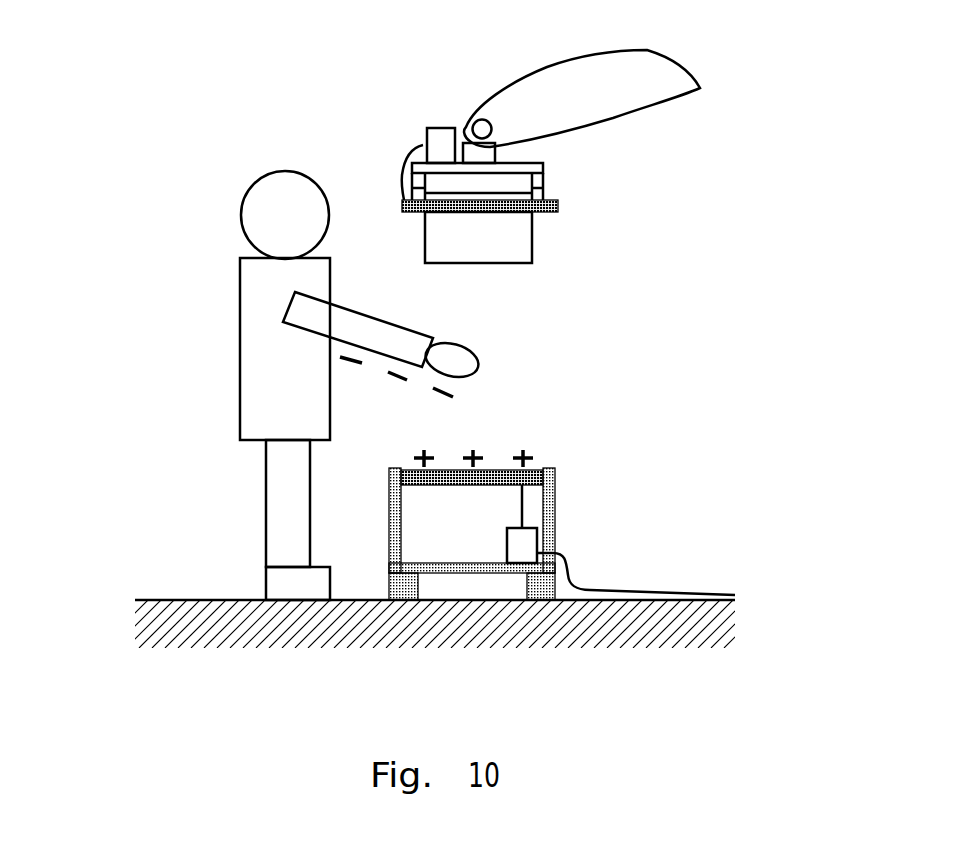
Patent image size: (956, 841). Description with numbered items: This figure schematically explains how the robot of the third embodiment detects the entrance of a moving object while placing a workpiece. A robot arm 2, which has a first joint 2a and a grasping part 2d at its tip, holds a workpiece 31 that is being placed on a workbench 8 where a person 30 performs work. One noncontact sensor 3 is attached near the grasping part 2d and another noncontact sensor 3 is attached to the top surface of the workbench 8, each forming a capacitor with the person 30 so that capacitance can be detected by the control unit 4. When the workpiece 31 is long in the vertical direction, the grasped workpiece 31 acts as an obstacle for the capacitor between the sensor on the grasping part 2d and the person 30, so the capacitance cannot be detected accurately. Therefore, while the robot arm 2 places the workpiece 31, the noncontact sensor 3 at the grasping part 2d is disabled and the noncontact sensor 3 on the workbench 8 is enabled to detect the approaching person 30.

The person 30 is at (285, 168).
The robot arm 2 is at (584, 67).
The first joint 2a is at (480, 115).
The grasping part 2d is at (545, 166).
The noncontact sensor 3 is at (558, 200).
The control unit 4 is at (438, 127).
The workpiece 31 is at (523, 242).
The workbench 8 is at (389, 470).